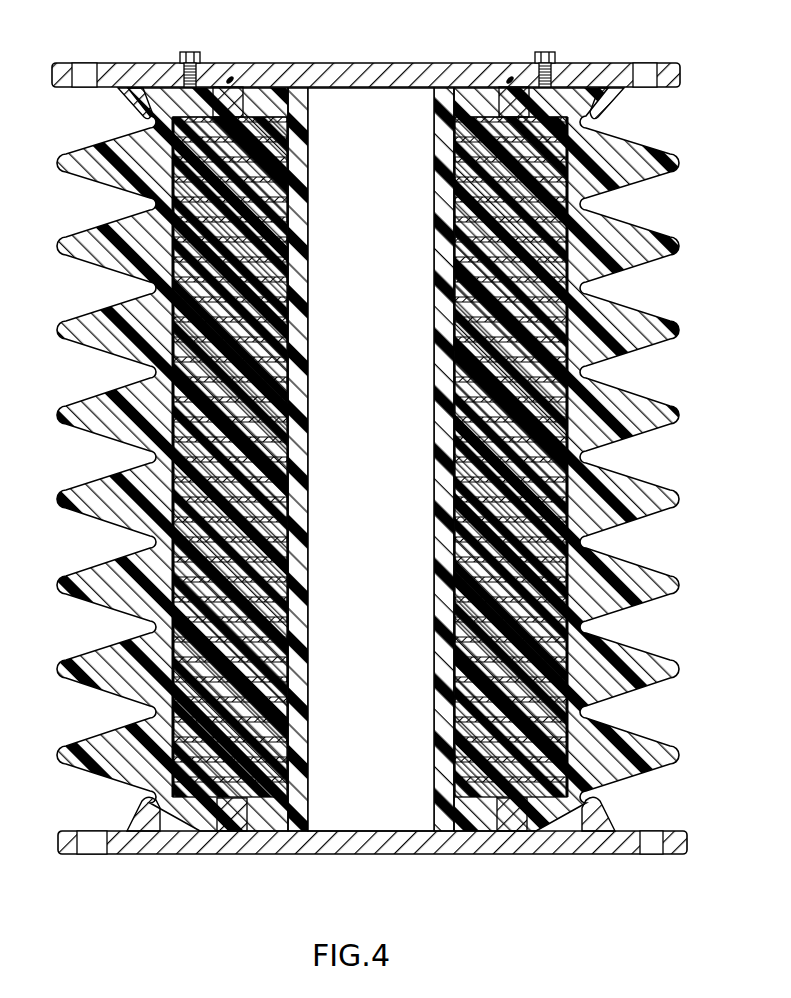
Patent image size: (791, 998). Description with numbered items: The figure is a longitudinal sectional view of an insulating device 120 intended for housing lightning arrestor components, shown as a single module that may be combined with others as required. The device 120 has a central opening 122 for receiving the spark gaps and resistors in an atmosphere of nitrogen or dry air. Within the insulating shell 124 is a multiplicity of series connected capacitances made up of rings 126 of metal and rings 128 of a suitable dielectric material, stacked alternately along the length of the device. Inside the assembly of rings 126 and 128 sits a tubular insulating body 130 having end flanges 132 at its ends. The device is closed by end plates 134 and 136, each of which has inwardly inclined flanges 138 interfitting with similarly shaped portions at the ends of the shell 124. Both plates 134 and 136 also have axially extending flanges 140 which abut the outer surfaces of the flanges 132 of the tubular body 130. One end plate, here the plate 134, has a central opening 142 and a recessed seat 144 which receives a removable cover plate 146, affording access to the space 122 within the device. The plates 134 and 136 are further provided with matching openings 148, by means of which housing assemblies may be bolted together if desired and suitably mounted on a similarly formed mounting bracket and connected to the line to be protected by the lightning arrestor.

The insulating device 120 is at (678, 84).
The central opening 122 is at (383, 422).
The insulating shell 124 is at (614, 390).
The rings of metal 126 is at (273, 466).
The rings of dielectric material 128 is at (282, 510).
The tubular insulating body 130 is at (300, 177).
The end flanges 132 is at (493, 817).
The end plate 134 is at (135, 72).
The end plate 136 is at (154, 846).
The inwardly inclined flanges 138 is at (140, 103).
The axially extending flanges 140 is at (242, 808).
The central opening 142 is at (312, 72).
The recessed seat 144 is at (563, 70).
The removable cover plate 146 is at (288, 64).
The matching openings 148 is at (660, 848).